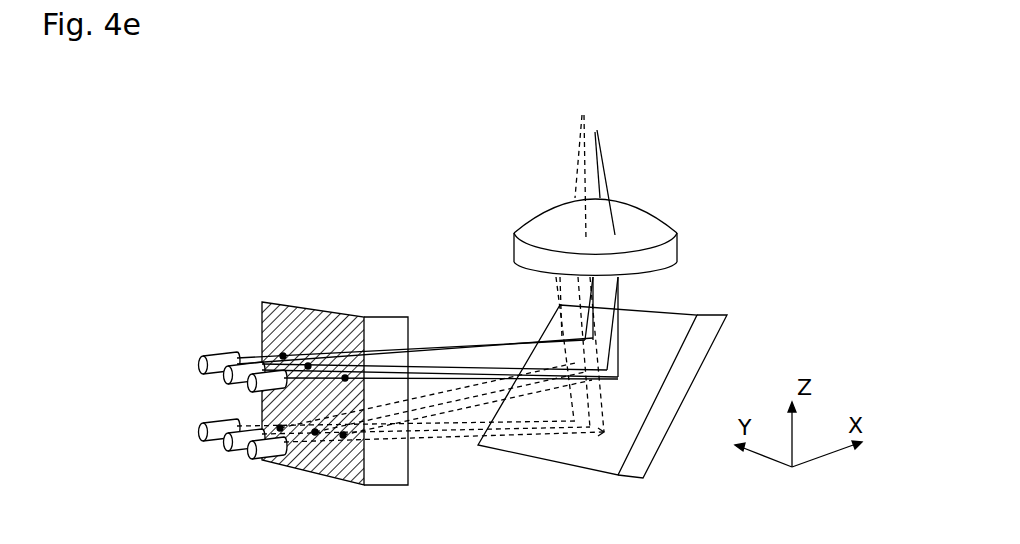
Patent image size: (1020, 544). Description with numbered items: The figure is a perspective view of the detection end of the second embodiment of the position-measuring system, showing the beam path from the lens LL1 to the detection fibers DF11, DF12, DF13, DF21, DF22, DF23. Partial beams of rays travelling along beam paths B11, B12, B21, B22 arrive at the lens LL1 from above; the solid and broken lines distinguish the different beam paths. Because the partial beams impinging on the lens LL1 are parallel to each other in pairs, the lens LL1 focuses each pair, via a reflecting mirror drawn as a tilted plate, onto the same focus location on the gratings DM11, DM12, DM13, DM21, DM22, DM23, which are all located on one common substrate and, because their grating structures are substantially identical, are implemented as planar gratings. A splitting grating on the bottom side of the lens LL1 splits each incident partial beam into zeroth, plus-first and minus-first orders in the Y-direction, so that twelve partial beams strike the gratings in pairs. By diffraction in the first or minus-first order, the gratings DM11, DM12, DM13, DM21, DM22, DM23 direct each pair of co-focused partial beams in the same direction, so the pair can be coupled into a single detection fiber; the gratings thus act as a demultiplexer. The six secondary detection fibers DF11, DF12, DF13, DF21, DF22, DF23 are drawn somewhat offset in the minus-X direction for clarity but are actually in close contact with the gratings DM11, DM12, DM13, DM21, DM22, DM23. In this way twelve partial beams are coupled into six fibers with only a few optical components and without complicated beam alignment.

The detection fiber DF11 is at (198, 365).
The detection fiber DF12 is at (223, 375).
The detection fiber DF13 is at (247, 383).
The detection fiber DF21 is at (198, 432).
The detection fiber DF22 is at (223, 442).
The detection fiber DF23 is at (247, 450).
The grating DM11 is at (279, 349).
The grating DM12 is at (305, 359).
The grating DM13 is at (343, 371).
The grating DM21 is at (284, 433).
The grating DM22 is at (317, 437).
The grating DM23 is at (345, 440).
The beam path B11 is at (615, 215).
The beam path B12 is at (580, 225).
The beam path B21 is at (598, 175).
The beam path B22 is at (572, 178).
The lens LL1 is at (692, 243).